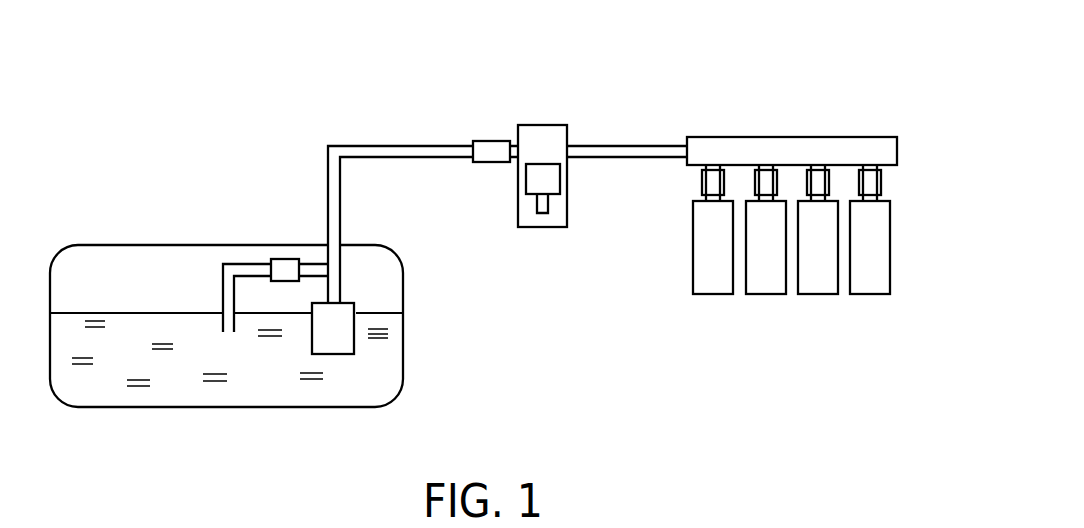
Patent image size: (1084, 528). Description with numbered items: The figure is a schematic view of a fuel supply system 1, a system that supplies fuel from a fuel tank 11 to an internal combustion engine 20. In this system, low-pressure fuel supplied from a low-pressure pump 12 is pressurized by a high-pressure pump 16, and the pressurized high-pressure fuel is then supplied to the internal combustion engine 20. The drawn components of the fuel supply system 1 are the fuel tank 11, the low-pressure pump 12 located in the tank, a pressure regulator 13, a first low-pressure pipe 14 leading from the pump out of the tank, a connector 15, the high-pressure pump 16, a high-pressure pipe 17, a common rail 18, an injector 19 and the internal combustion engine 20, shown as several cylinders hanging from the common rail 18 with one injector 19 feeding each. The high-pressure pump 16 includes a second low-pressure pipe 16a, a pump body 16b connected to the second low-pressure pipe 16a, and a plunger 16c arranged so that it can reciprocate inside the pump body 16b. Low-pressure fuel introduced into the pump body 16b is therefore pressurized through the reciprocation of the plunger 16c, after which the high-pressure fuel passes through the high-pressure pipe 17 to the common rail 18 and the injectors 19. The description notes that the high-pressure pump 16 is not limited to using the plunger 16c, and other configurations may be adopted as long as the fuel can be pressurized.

The fuel supply system 1 is at (855, 75).
The fuel tank 11 is at (183, 244).
The low-pressure pump 12 is at (352, 303).
The pressure regulator 13 is at (285, 258).
The first low-pressure pipe 14 is at (433, 145).
The connector 15 is at (488, 163).
The high-pressure pump 16 is at (562, 151).
The second low-pressure pipe 16a is at (513, 146).
The pump body 16b is at (540, 125).
The plunger 16c is at (562, 180).
The high-pressure pipe 17 is at (625, 146).
The common rail 18 is at (757, 135).
The injector 19 is at (882, 180).
The internal combustion engine 20 is at (871, 295).